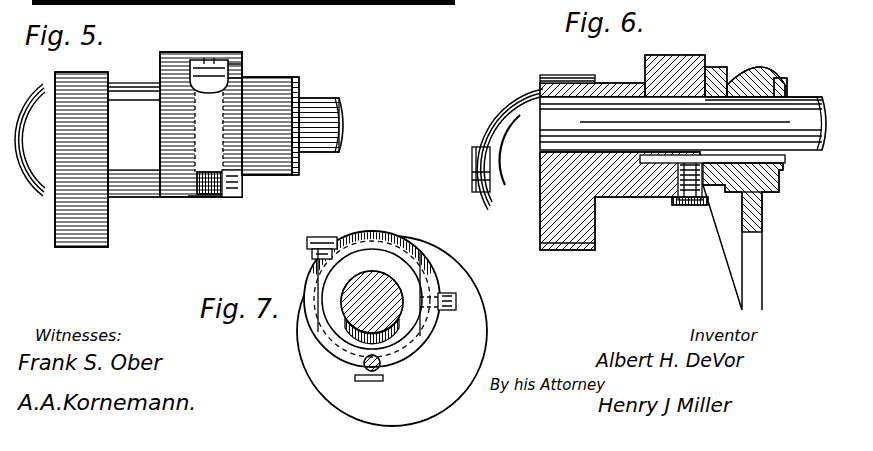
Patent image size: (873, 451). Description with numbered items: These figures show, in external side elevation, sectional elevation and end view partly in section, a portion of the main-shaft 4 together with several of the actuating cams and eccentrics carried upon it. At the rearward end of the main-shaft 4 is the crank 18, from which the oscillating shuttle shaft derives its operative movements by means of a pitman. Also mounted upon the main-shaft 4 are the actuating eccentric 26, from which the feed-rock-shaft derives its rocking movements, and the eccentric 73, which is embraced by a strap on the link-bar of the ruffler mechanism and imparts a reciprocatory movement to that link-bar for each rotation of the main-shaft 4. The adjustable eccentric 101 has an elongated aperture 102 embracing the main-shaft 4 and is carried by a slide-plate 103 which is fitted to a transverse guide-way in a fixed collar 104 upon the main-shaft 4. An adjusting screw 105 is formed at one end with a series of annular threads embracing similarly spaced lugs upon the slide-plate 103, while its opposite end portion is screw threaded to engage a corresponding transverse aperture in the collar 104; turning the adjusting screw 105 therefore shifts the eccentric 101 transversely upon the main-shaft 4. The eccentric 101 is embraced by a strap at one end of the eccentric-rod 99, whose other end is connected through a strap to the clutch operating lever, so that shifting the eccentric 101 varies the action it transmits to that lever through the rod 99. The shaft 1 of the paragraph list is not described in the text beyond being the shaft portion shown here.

In FIG. 6, the shaft 1 is at (616, 117).
In FIG. 5, the main-shaft 4 is at (338, 112).
In FIG. 7, the main-shaft 4 is at (398, 312).
In FIG. 6, the crank 18 is at (476, 150).
In FIG. 5, the actuating eccentric 26 is at (134, 140).
In FIG. 6, the actuating eccentric 26 is at (620, 159).
In FIG. 5, the eccentric 73 is at (55, 216).
In FIG. 6, the eccentric 73 is at (556, 76).
In FIG. 7, the eccentric 73 is at (392, 331).
In FIG. 6, the eccentric-rod 99 is at (762, 246).
In FIG. 5, the adjustable eccentric 101 is at (255, 86).
In FIG. 6, the adjustable eccentric 101 is at (752, 68).
In FIG. 7, the adjustable eccentric 101 is at (372, 262).
In FIG. 6, the elongated aperture 102 is at (778, 160).
In FIG. 7, the elongated aperture 102 is at (342, 333).
In FIG. 5, the slide-plate 103 is at (240, 182).
In FIG. 6, the slide-plate 103 is at (714, 66).
In FIG. 7, the slide-plate 103 is at (405, 337).
In FIG. 5, the fixed collar 104 is at (182, 197).
In FIG. 6, the fixed collar 104 is at (662, 56).
In FIG. 5, the adjusting screw 105 is at (212, 196).
In FIG. 7, the adjusting screw 105 is at (318, 237).